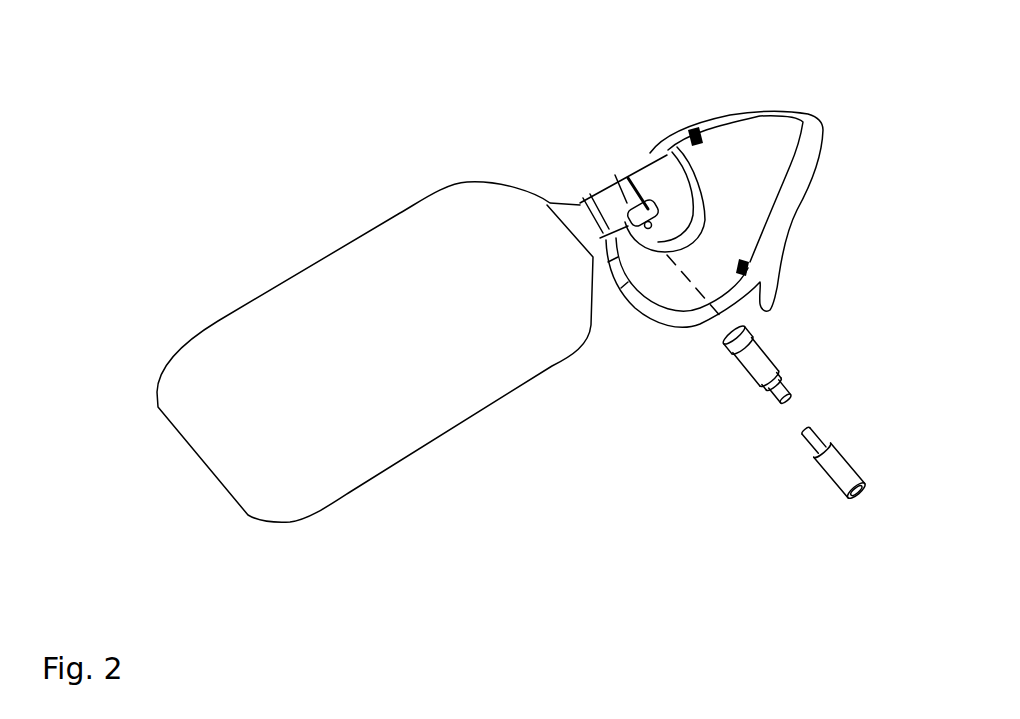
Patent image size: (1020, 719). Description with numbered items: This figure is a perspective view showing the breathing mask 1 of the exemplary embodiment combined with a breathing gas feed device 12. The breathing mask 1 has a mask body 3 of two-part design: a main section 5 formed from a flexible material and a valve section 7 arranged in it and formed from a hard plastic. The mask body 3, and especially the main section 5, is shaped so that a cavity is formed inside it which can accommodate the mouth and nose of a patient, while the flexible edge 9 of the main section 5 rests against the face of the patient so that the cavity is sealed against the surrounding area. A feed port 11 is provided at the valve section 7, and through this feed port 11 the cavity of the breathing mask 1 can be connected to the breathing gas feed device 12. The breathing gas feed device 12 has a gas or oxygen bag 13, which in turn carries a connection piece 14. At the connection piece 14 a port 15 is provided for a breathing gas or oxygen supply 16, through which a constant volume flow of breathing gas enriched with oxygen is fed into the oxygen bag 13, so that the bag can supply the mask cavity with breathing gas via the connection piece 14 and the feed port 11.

The breathing mask 1 is at (736, 104).
The mask body 3 is at (753, 200).
The main section 5 is at (746, 198).
The valve section 7 is at (680, 193).
The flexible edge 9 is at (800, 175).
The feed port 11 is at (650, 175).
The breathing gas feed device 12 is at (383, 188).
The oxygen bag 13 is at (389, 370).
The connection piece 14 is at (600, 192).
The port 15 is at (648, 210).
The breathing gas or oxygen supply 16 is at (778, 350).